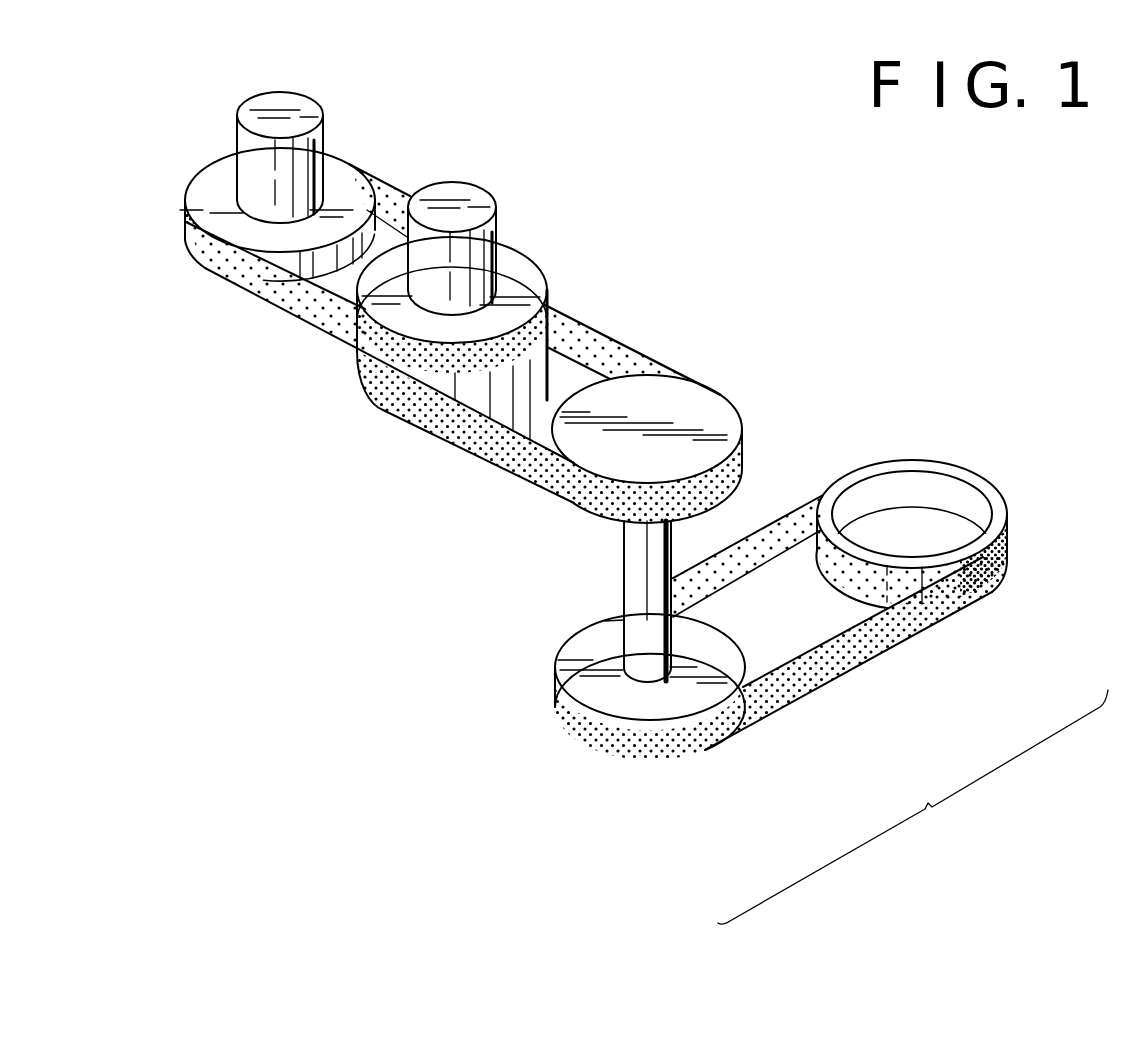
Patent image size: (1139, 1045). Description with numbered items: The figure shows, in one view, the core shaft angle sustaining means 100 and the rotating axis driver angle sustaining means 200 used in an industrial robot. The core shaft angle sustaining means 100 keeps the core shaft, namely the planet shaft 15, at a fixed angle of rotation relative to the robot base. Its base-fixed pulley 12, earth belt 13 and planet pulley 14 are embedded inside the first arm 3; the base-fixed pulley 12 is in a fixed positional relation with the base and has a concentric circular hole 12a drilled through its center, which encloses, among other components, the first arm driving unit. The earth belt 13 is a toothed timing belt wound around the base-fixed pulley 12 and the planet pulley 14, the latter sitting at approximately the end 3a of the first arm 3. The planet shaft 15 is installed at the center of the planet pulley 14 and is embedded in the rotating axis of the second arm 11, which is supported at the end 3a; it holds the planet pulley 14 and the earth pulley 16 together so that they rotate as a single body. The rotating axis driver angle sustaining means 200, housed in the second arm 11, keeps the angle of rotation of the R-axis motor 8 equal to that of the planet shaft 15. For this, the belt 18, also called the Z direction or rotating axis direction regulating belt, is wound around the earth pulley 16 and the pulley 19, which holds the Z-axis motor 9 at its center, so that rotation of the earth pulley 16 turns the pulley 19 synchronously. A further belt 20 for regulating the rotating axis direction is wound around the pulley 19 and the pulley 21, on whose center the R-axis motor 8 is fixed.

The first arm 3 is at (1017, 571).
The end of the first arm 3a is at (651, 780).
The R-axis motor 8 is at (300, 104).
The Z-axis motor 9 is at (462, 188).
The second arm 11 is at (428, 548).
The base-fixed pulley 12 is at (987, 480).
The concentric circular hole 12a is at (923, 522).
The earth belt 13 is at (827, 667).
The planet pulley 14 is at (587, 697).
The planet shaft 15 is at (630, 570).
The earth pulley 16 is at (707, 400).
The belt 18 is at (515, 460).
The pulley 19 is at (437, 385).
The belt 20 is at (318, 312).
The pulley for regulating the R direction 21 is at (208, 194).
The core shaft angle sustaining means 100 is at (913, 807).
The rotating axis driver angle sustaining means 200 is at (590, 253).